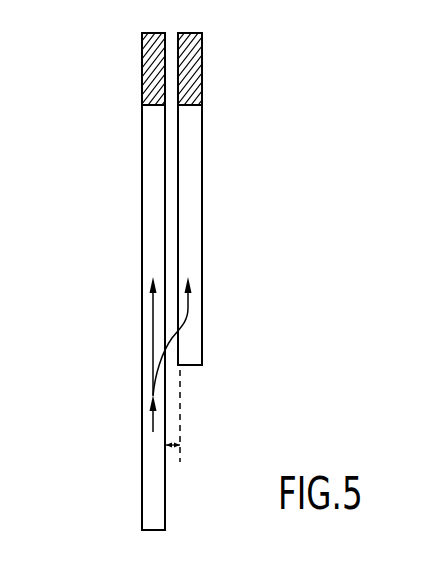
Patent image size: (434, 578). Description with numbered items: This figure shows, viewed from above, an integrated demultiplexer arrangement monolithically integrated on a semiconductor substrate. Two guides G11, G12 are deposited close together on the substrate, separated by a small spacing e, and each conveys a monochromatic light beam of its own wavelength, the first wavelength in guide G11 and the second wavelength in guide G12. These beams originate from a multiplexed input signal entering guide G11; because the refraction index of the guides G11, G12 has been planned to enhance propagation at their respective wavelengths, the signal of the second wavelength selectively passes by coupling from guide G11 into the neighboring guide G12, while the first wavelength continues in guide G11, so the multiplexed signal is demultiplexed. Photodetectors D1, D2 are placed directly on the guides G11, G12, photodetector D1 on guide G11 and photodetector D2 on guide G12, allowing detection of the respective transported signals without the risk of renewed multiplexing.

The photodetector D1 is at (138, 50).
The photodetector D2 is at (204, 80).
The guide G11 is at (152, 260).
The guide G12 is at (193, 257).
The spacing between guides e is at (173, 423).